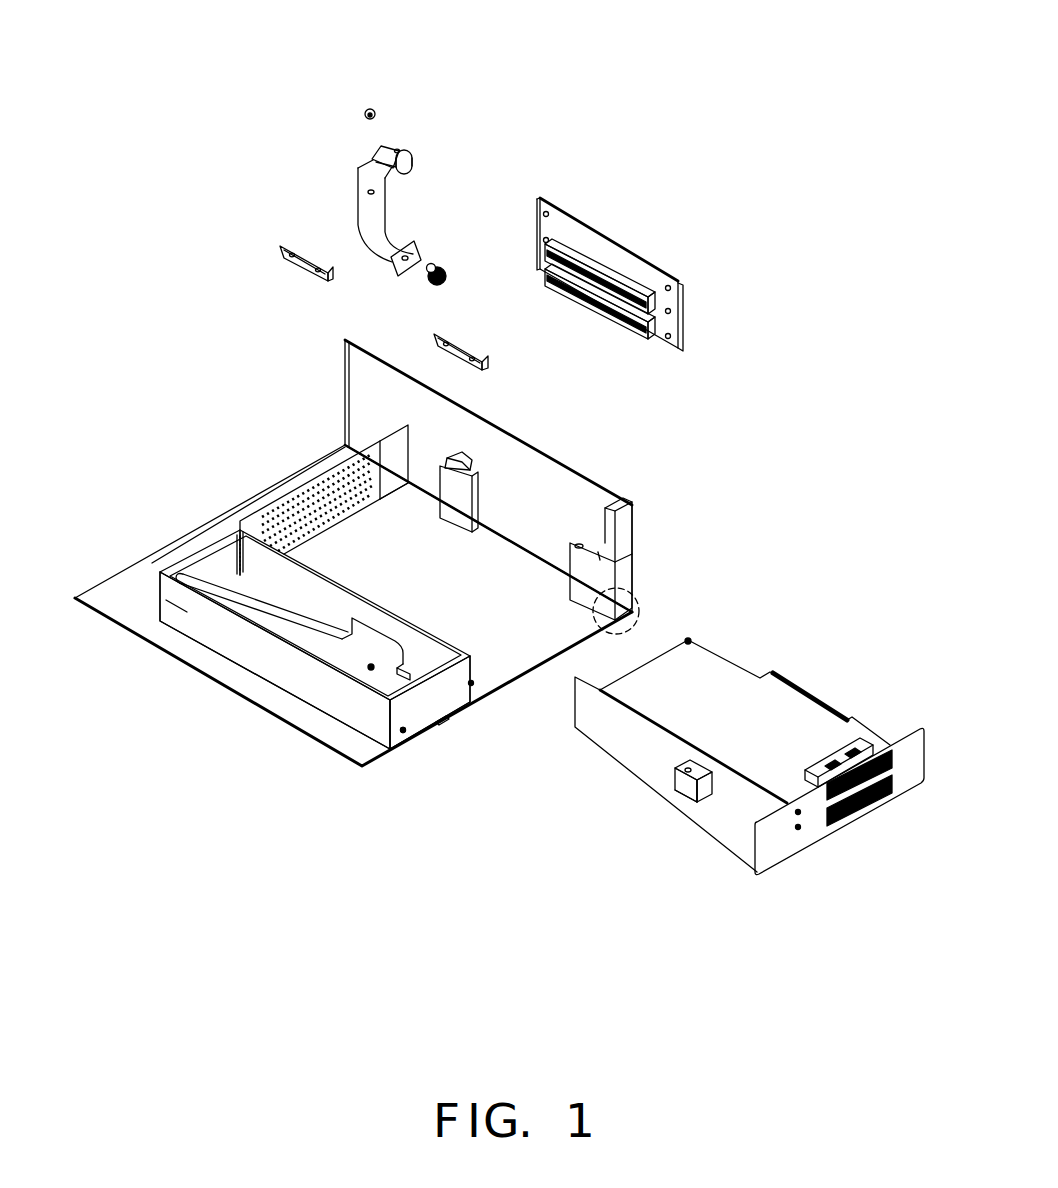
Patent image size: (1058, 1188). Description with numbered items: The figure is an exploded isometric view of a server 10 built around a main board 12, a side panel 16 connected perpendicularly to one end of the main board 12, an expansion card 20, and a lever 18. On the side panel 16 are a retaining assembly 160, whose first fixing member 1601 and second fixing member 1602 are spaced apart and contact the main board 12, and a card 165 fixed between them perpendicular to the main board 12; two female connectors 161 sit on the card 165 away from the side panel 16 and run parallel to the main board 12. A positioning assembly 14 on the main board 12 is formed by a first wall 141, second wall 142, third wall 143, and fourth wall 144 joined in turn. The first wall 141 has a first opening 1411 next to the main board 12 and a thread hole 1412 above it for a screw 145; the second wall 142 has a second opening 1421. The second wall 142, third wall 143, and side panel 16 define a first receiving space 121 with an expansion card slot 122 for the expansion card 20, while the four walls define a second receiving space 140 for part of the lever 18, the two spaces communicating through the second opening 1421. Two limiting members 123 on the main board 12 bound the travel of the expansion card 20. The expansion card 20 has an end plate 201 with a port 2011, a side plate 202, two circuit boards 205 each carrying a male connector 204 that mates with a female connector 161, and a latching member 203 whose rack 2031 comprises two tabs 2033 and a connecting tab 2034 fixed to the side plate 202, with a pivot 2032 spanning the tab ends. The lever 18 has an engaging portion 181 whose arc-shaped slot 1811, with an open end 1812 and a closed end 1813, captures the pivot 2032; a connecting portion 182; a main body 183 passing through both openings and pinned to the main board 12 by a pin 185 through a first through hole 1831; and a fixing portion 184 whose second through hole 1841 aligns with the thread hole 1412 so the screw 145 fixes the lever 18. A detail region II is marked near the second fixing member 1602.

The server 10 is at (602, 50).
The main board 12 is at (138, 588).
The first receiving space 121 is at (307, 495).
The expansion card slot 122 is at (507, 648).
The limiting members 123 is at (288, 262).
The positioning assembly 14 is at (330, 730).
The second receiving space 140 is at (267, 612).
The first wall 141 is at (452, 693).
The first opening 1411 is at (440, 725).
The thread hole 1412 is at (403, 733).
The second wall 142 is at (240, 578).
The second opening 1421 is at (373, 640).
The third wall 143 is at (217, 530).
The fourth wall 144 is at (187, 610).
The screw 145 is at (447, 277).
The side panel 16 is at (372, 393).
The retaining assembly 160 is at (680, 393).
The first fixing member 1601 is at (463, 483).
The second fixing member 1602 is at (580, 540).
The female connectors 161 is at (597, 278).
The card 165 is at (653, 290).
The lever 18 is at (340, 157).
The engaging portion 181 is at (412, 158).
The slot 1811 is at (398, 155).
The open end 1812 is at (414, 168).
The closed end 1813 is at (395, 148).
The connecting portion 182 is at (375, 162).
The main body 183 is at (375, 228).
The first through hole 1831 is at (368, 192).
The fixing portion 184 is at (420, 252).
The second through hole 1841 is at (410, 268).
The pin 185 is at (368, 109).
The detail region II is at (640, 600).
The expansion card 20 is at (790, 632).
The end plate 201 is at (910, 750).
The port 2011 is at (887, 797).
The side plate 202 is at (627, 735).
The latching member 203 is at (637, 945).
The rack 2031 is at (718, 893).
The pivot 2032 is at (670, 790).
The tabs 2033 is at (697, 808).
The connecting tab 2034 is at (713, 795).
The male connector 204 is at (813, 692).
The circuit boards 205 is at (713, 683).